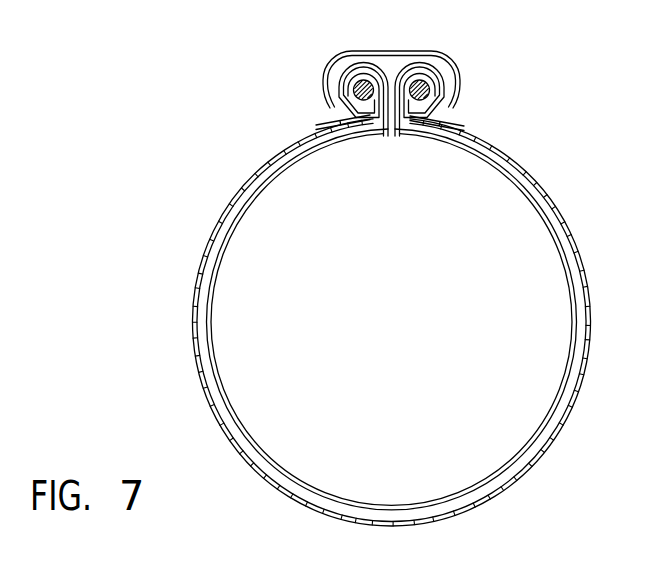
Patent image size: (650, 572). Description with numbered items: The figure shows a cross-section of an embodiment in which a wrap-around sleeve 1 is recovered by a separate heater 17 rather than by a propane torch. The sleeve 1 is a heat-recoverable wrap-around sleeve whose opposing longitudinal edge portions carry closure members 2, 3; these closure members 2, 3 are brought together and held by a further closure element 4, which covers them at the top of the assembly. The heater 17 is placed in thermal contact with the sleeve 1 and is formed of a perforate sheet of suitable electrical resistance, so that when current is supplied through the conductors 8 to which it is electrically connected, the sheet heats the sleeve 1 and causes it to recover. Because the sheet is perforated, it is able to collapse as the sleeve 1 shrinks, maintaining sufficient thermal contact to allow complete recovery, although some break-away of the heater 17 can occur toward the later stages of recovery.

The sleeve 1 is at (496, 171).
The closure member 2 is at (350, 88).
The closure member 3 is at (430, 88).
The closure element 4 is at (333, 60).
The conductors 8 is at (357, 92).
The heater 17 is at (553, 203).